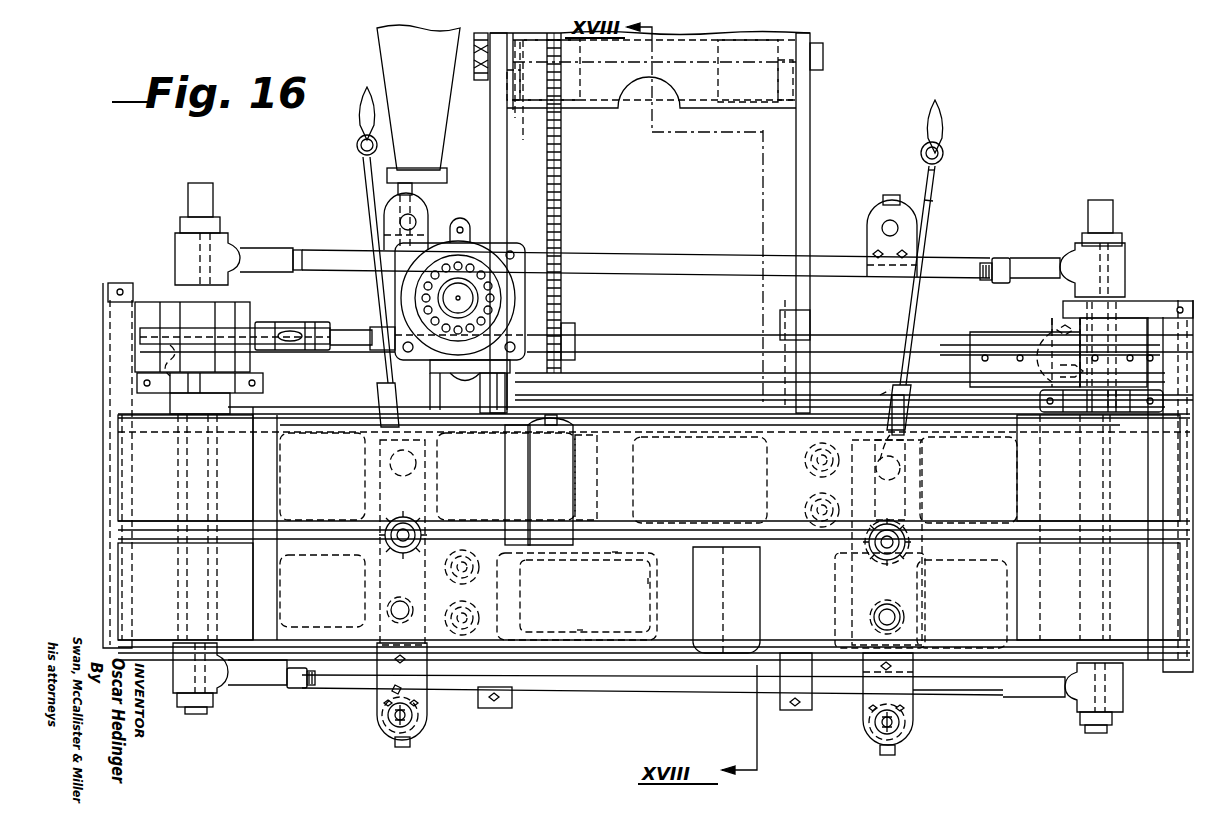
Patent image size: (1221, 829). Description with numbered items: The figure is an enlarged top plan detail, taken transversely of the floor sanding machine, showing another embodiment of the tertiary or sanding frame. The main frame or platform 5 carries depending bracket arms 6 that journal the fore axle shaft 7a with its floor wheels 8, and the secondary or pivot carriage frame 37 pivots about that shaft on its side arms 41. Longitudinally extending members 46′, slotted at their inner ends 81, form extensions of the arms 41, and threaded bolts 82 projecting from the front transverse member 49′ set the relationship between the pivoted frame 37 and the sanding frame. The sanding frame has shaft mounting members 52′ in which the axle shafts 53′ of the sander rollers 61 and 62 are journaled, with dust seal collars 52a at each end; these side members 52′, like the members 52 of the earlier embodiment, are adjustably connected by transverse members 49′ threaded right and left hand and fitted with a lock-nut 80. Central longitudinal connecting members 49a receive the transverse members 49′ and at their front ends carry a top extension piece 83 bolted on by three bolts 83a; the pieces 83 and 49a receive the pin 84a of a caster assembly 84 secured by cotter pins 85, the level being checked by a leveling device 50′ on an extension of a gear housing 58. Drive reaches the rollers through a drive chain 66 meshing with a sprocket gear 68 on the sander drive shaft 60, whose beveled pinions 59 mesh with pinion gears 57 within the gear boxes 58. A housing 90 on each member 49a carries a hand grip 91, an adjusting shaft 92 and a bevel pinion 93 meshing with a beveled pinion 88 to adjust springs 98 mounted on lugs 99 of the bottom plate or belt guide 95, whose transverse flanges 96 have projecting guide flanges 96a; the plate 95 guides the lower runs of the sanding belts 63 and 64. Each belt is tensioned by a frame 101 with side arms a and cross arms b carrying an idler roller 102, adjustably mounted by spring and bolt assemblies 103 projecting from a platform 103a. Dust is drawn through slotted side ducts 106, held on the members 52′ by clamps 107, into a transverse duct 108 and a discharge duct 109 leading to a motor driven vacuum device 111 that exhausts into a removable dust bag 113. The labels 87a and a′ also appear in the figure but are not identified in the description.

The main frame 5 is at (600, 110).
The bracket arms 6 is at (516, 118).
The axle shaft 7a is at (700, 58).
The floor wheels 8 is at (580, 62).
The secondary frame 37 is at (822, 70).
The side arms 41 is at (492, 94).
The longitudinally extending members 46′ is at (500, 384).
The transverse members 49′ is at (645, 262).
The longitudinal connecting member 49a is at (380, 210).
The leveling device 50′ is at (301, 330).
The shaft supporting members 52 is at (650, 265).
The shaft mounting members 52′ is at (165, 695).
The dust seal collars 52a is at (220, 228).
The axle shafts 53′ is at (213, 194).
The pinion gears 57 is at (1050, 376).
The gear boxes 58 is at (150, 318).
The beveled pinions 59 is at (1070, 322).
The sander drive shaft 60 is at (676, 345).
The sander roller 61 is at (130, 407).
The sander roller 62 is at (120, 527).
The sanding belt 63 is at (118, 432).
The sanding belt 64 is at (120, 560).
The drive chain 66 is at (560, 188).
The sprocket gear 68 is at (573, 322).
The lock-nut 80 is at (1000, 258).
The inner ends 81 is at (785, 322).
The threaded bolts 82 is at (513, 708).
The top extension piece 83 is at (423, 708).
The threaded bolts 83a is at (392, 690).
The caster assembly 84 is at (900, 200).
The pin 84a is at (407, 720).
The cotter pins 85 is at (897, 730).
The arm 87a is at (380, 578).
The beveled pinion 88 is at (905, 553).
The housing 90 is at (886, 403).
The hand adjustment grip 91 is at (945, 120).
The adjusting shaft 92 is at (930, 205).
The bevel pinion 93 is at (900, 522).
The belt guide plate 95 is at (958, 717).
The transverse flange members 96 is at (978, 650).
The guide flanges 96a is at (910, 455).
The compressible springs 98 is at (900, 615).
The lugs 99 is at (900, 614).
The tensioning frame 101 is at (648, 590).
The idler roller 102 is at (575, 490).
The spring and bolt assemblies 103 is at (810, 505).
The platform 103a is at (915, 555).
The side ducts 106 is at (115, 588).
The clamps 107 is at (142, 283).
The transverse duct 108 is at (840, 369).
The discharge duct 109 is at (590, 415).
The vacuum device 111 is at (488, 240).
The dust bag 113 is at (386, 60).
The side arms a is at (578, 638).
The cam point a' a′ is at (615, 552).
The cross arms b is at (648, 580).